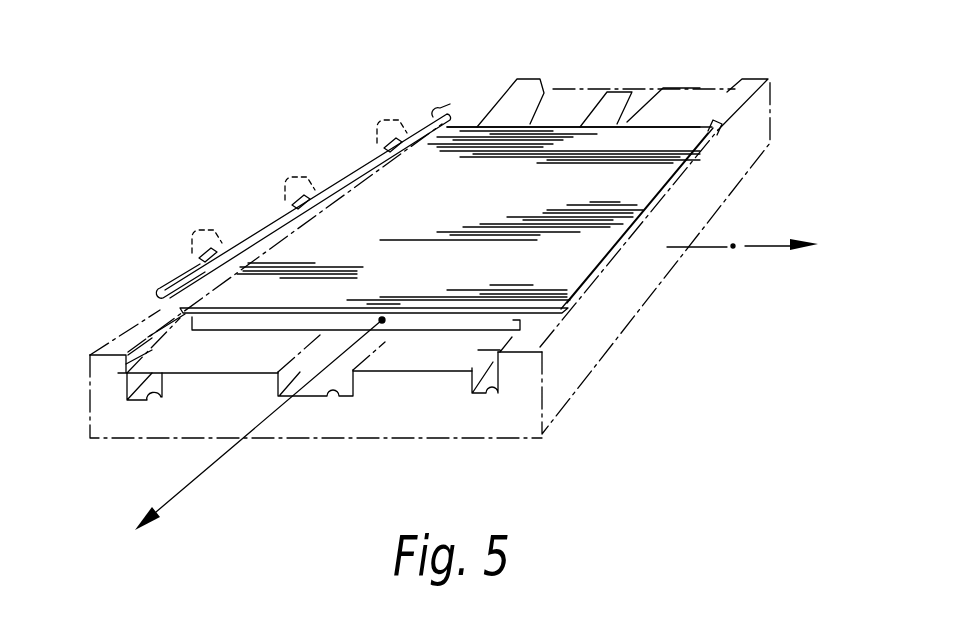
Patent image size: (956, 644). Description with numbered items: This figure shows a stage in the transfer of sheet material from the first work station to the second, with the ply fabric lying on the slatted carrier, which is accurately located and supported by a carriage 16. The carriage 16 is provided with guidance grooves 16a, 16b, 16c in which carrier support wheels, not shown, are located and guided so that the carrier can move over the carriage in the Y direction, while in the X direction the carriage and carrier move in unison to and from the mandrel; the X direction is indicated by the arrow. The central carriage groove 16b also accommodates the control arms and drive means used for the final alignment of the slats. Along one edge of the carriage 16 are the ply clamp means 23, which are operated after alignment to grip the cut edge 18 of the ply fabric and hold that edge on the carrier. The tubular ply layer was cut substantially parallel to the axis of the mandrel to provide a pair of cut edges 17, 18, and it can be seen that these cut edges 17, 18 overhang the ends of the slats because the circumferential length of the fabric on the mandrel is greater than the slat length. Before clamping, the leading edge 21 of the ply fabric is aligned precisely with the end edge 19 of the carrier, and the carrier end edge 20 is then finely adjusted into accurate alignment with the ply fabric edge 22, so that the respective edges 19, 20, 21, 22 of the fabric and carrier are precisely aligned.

The carriage 16 is at (593, 92).
The guidance groove 16a is at (157, 402).
The central carriage groove 16b is at (337, 398).
The guidance groove 16c is at (490, 395).
The cut edge 17 is at (723, 130).
The cut edge 18 is at (275, 218).
The end edge of the carrier 19 is at (185, 330).
The end edge of the carrier 20 is at (477, 120).
The leading edge 21 is at (237, 303).
The ply fabric edge 22 is at (527, 107).
The ply clamp means 23 is at (378, 120).